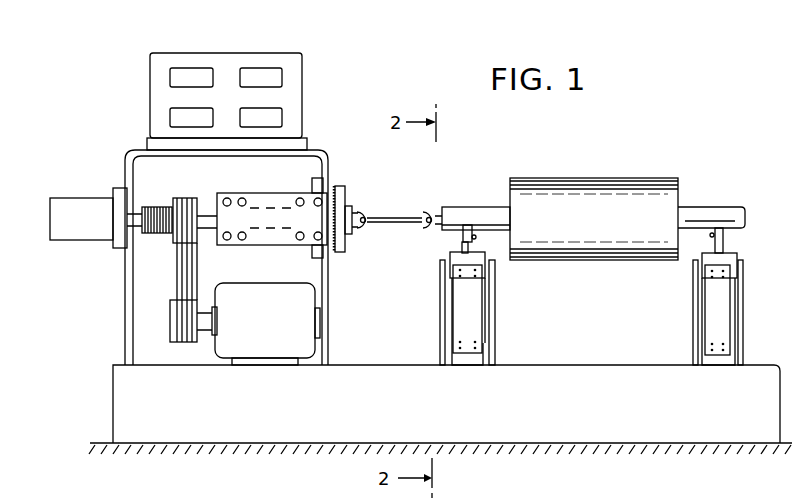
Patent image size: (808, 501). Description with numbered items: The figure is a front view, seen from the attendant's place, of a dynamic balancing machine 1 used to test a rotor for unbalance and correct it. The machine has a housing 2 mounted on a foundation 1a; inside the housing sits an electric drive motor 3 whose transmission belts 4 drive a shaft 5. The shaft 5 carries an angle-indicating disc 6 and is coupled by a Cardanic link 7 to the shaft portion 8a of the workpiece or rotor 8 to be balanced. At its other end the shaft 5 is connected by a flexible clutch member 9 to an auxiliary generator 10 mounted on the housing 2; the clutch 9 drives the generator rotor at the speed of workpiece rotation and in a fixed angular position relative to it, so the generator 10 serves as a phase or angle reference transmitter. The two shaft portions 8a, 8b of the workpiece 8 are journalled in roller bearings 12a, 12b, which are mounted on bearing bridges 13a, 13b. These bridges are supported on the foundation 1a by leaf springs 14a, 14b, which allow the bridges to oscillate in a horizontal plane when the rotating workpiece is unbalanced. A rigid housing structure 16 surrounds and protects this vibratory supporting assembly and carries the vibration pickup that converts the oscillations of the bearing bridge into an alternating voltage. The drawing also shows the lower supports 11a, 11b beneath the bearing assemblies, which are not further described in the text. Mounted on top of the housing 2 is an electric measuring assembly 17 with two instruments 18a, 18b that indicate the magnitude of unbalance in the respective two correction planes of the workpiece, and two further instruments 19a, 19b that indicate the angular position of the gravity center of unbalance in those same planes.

The balancing machine 1 is at (583, 316).
The foundation 1a is at (116, 384).
The housing 2 is at (127, 317).
The electric drive motor 3 is at (232, 292).
The transmission belts 4 is at (177, 272).
The shaft 5 is at (210, 207).
The angle-indicating disc 6 is at (338, 191).
The Cardanic link 7 is at (382, 219).
The workpiece or rotor 8 is at (580, 182).
The shaft portion 8a is at (450, 210).
The shaft portion 8b is at (688, 211).
The flexible clutch member 9 is at (145, 208).
The auxiliary generator 10 is at (86, 206).
The support foot 11a is at (458, 362).
The support foot 11b is at (708, 362).
The roller bearing 12a is at (460, 233).
The roller bearing 12b is at (723, 245).
The bearing bridge 13a is at (460, 259).
The bearing bridge 13b is at (733, 256).
The leaf springs 14a is at (462, 320).
The leaf springs 14b is at (724, 305).
The rigid housing structure 16 is at (492, 314).
The electric measuring assembly 17 is at (280, 55).
The instrument 18a is at (170, 75).
The instrument 18b is at (282, 75).
The instrument 19a is at (170, 116).
The instrument 19b is at (282, 116).